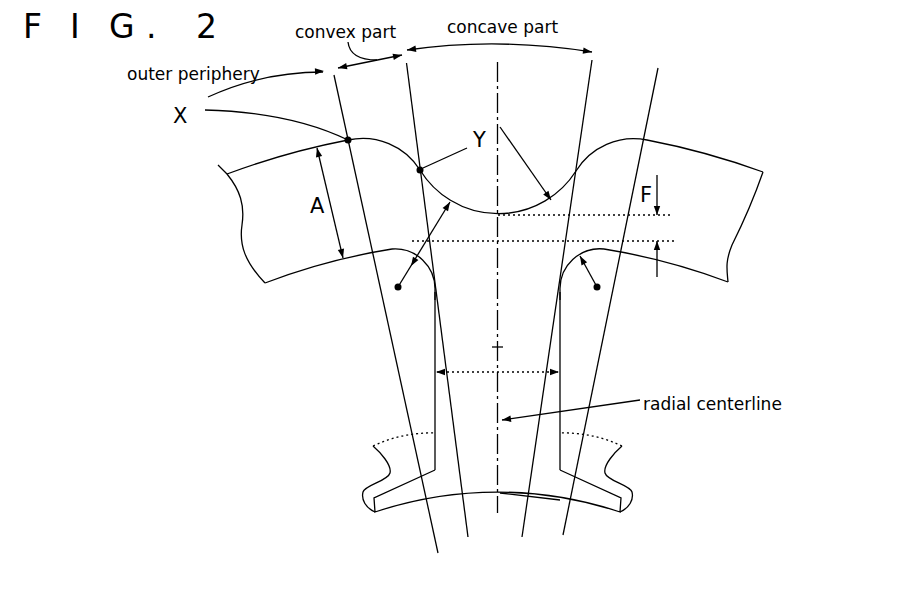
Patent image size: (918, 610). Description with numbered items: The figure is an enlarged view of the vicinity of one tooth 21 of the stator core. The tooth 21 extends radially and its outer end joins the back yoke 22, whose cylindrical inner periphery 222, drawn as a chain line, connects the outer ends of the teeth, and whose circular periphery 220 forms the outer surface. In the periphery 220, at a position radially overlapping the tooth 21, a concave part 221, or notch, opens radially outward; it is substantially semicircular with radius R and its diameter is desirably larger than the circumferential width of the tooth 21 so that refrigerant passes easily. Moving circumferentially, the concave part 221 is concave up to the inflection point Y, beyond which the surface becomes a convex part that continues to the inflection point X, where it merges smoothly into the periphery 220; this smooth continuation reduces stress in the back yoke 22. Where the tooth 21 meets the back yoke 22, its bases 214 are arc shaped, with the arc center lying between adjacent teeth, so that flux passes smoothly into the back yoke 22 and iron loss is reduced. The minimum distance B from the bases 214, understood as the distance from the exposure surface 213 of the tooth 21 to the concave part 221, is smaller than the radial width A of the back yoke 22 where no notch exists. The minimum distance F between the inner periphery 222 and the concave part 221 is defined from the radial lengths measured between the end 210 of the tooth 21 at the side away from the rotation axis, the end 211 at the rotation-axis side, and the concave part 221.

The back yoke 22 is at (737, 165).
The periphery 220 is at (283, 153).
The concave part 221 is at (473, 200).
The inner periphery 222 is at (290, 276).
The tooth 21 is at (498, 495).
The end 210 is at (476, 242).
The end 211 is at (569, 522).
The exposure surface 213 is at (373, 447).
The base 214 is at (374, 262).